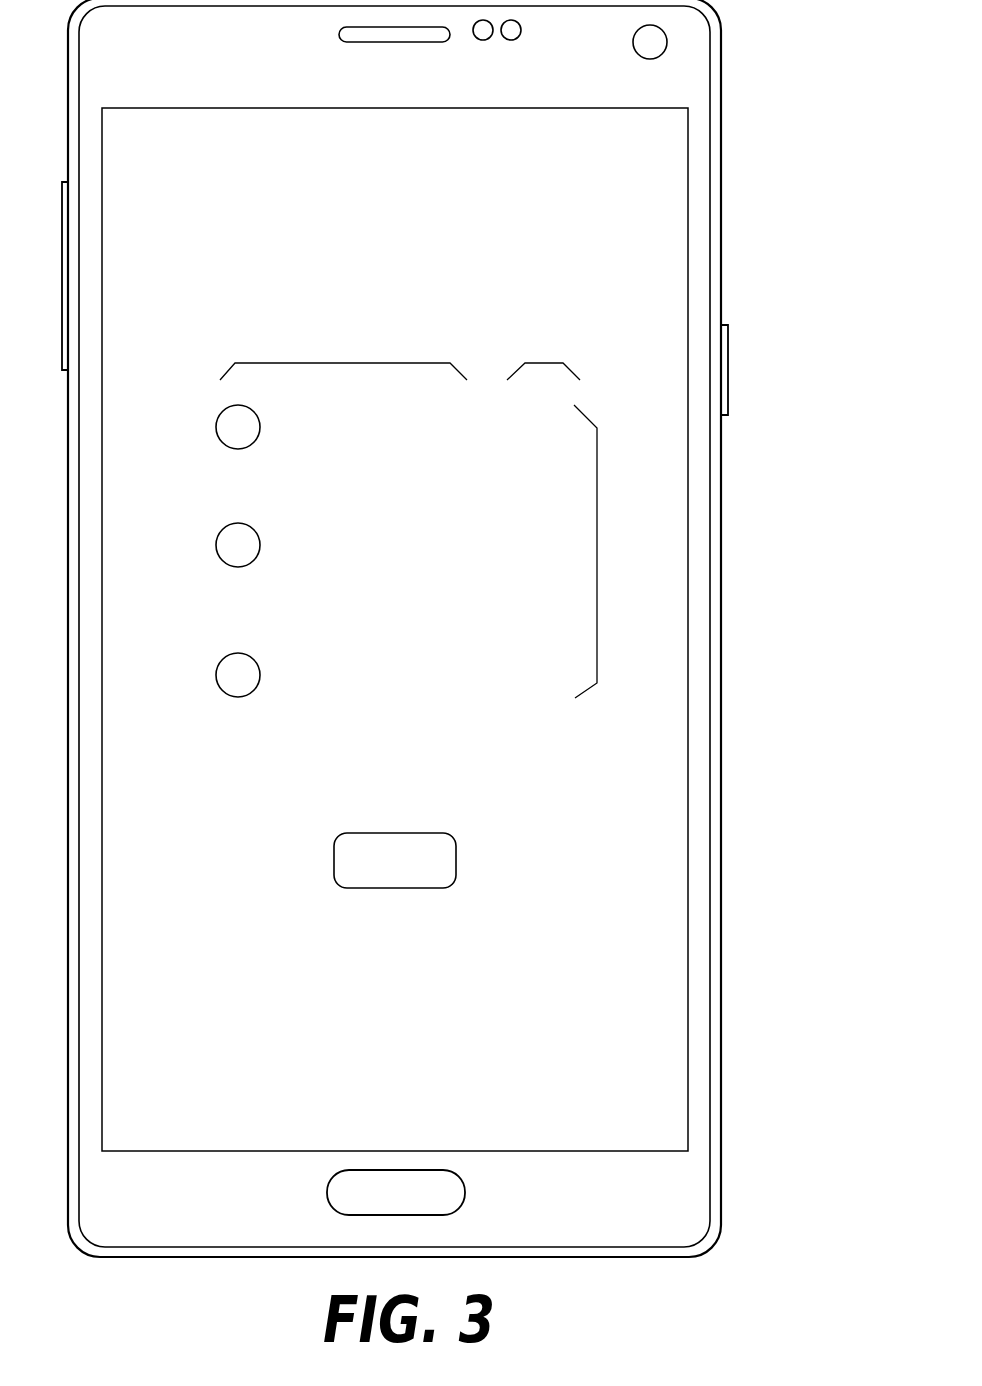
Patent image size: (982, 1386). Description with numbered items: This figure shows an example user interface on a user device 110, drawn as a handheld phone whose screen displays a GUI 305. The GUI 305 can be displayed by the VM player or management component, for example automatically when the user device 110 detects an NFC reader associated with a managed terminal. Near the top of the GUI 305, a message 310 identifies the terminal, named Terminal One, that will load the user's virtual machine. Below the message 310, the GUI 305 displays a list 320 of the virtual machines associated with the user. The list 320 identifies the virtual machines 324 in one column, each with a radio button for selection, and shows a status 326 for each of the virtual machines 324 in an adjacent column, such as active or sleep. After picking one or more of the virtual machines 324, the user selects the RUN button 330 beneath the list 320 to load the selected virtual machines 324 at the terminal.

The user device 110 is at (722, 48).
The GUI 305 is at (630, 150).
The message 310 is at (527, 237).
The list 320 is at (598, 557).
The virtual machines 324 is at (353, 362).
The status 326 is at (545, 362).
The button 330 is at (457, 855).